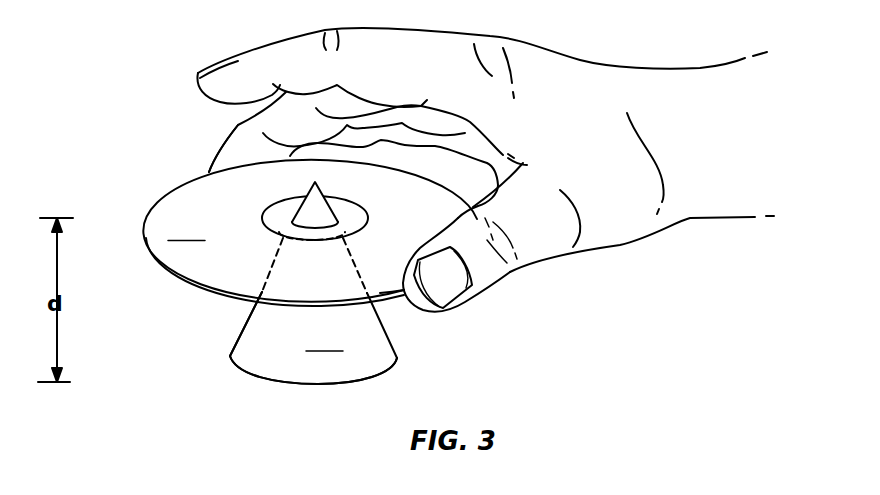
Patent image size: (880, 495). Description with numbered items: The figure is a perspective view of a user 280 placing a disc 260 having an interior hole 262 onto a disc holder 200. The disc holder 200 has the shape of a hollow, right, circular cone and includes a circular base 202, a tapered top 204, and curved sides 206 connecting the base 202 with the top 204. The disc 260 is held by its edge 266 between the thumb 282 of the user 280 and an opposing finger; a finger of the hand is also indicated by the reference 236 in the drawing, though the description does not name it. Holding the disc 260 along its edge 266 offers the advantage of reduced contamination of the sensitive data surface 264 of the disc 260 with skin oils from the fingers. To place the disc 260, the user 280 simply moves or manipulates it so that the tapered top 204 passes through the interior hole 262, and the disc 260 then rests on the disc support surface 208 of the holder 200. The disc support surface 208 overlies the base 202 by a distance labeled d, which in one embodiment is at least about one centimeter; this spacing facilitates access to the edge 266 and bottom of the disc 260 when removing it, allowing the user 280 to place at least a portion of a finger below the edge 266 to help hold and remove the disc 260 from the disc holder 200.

The disc holder 200 is at (313, 338).
The circular base 202 is at (275, 382).
The tapered top 204 is at (327, 192).
The curved sides 206 is at (244, 336).
The disc support surface 208 is at (290, 221).
The finger 236 is at (221, 160).
The disc 260 is at (310, 231).
The interior hole 262 is at (292, 219).
The sensitive data surface 264 is at (159, 260).
The edge 266 is at (393, 297).
The user 280 is at (735, 183).
The thumb 282 is at (493, 274).